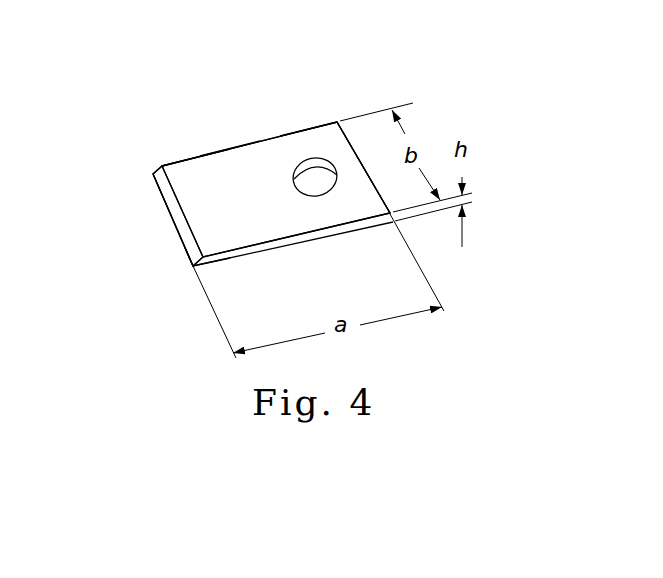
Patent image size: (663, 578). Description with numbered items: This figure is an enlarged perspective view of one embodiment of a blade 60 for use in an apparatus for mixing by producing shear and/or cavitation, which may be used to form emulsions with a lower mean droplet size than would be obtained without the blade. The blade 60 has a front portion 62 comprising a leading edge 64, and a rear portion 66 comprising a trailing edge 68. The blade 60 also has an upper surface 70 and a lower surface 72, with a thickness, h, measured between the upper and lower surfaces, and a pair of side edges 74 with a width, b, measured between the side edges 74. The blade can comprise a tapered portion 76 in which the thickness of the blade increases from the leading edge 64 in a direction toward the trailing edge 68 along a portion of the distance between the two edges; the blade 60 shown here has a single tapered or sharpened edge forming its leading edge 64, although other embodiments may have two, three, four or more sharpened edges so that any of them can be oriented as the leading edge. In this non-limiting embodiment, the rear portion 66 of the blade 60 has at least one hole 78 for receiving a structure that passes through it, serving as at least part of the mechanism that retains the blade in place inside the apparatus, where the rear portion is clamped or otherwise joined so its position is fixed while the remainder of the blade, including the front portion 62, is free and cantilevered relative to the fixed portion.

The blade 60 is at (278, 130).
The front portion 62 is at (192, 145).
The leading edge 64 is at (172, 223).
The rear portion 66 is at (308, 123).
The trailing edge 68 is at (351, 147).
The upper surface 70 is at (252, 168).
The lower surface 72 is at (160, 190).
The side edges 74 is at (229, 150).
The tapered portion 76 is at (193, 252).
The hole 78 is at (312, 197).